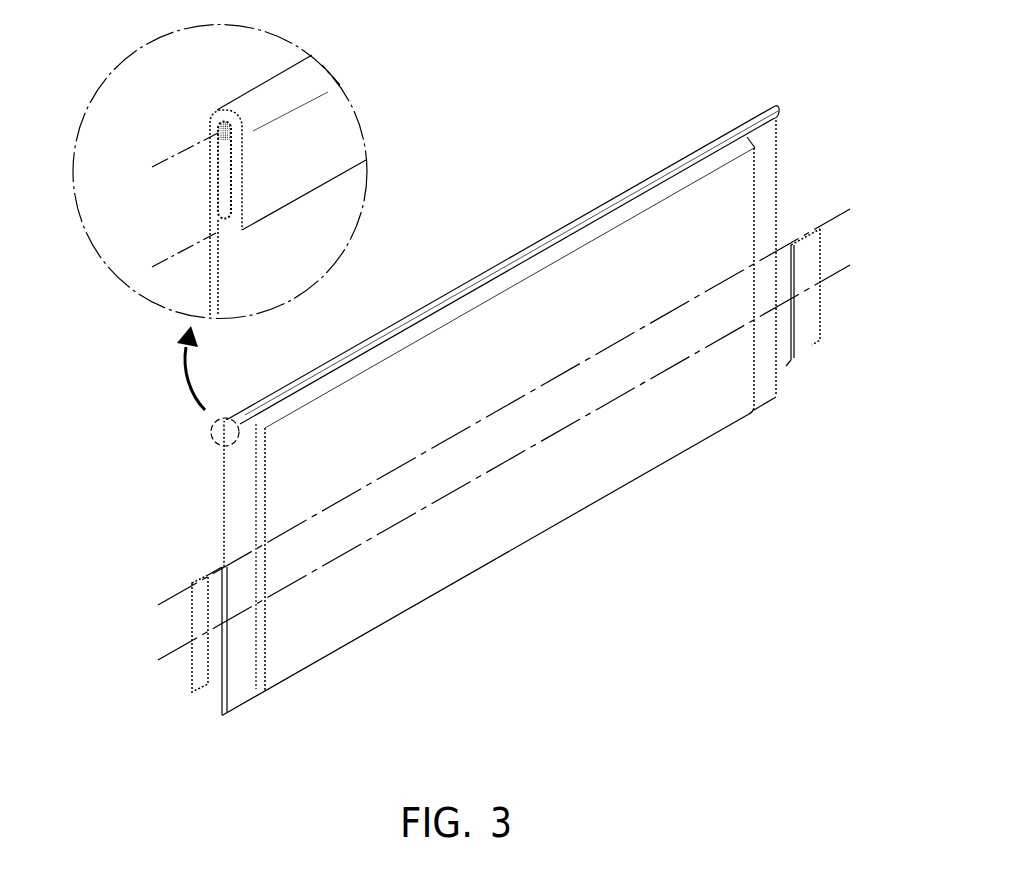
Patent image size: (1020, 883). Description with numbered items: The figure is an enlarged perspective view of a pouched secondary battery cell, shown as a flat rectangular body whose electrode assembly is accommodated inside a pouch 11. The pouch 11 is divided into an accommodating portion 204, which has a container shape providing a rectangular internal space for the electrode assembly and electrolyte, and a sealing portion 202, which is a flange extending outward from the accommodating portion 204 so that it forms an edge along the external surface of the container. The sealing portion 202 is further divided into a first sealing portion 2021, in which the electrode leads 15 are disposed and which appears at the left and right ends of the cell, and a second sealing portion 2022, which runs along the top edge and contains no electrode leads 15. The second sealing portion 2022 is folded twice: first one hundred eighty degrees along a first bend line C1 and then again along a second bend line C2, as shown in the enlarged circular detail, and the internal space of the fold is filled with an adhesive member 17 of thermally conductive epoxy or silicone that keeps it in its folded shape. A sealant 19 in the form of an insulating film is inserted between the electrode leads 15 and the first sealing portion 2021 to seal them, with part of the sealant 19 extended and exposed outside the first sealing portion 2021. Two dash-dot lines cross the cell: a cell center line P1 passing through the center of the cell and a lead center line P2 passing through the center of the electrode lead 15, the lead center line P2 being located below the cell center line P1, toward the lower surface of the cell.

The pouch 11 is at (575, 526).
The electrode leads 15 is at (194, 690).
The adhesive member 17 is at (228, 136).
The sealant 19 is at (219, 704).
The sealing portion 202 is at (770, 54).
The first sealing portion 2021 is at (763, 126).
The second sealing portion 2022 is at (677, 162).
The accommodating portion 204 is at (488, 357).
The first bend line C1 is at (190, 247).
The second bend line C2 is at (190, 146).
The cell center line P1 is at (170, 598).
The lead center line P2 is at (170, 657).